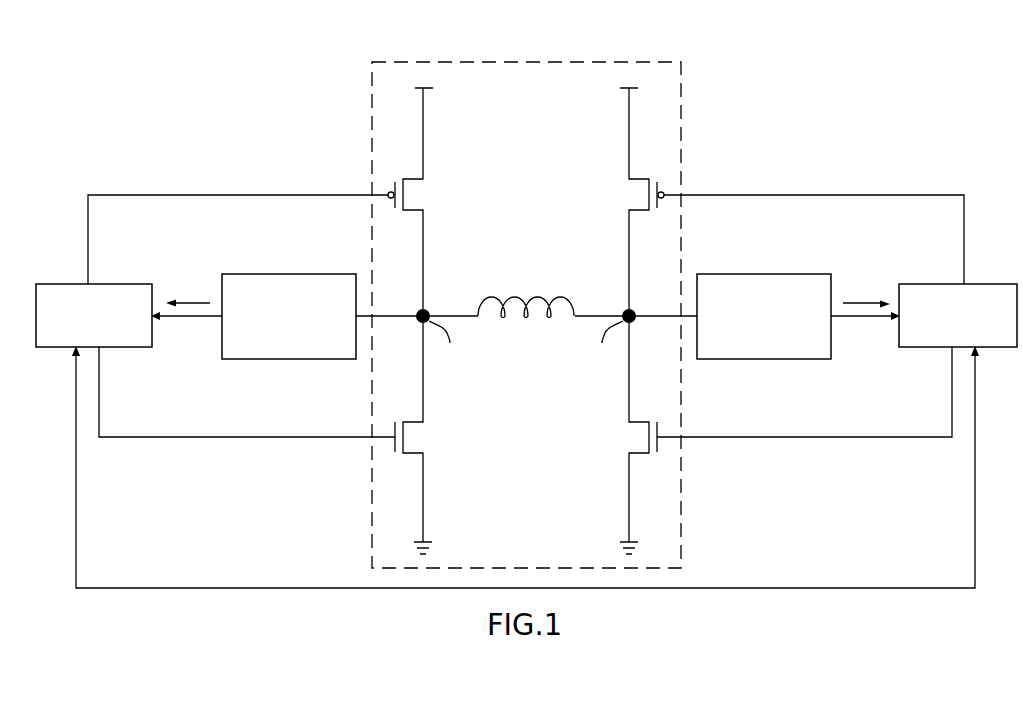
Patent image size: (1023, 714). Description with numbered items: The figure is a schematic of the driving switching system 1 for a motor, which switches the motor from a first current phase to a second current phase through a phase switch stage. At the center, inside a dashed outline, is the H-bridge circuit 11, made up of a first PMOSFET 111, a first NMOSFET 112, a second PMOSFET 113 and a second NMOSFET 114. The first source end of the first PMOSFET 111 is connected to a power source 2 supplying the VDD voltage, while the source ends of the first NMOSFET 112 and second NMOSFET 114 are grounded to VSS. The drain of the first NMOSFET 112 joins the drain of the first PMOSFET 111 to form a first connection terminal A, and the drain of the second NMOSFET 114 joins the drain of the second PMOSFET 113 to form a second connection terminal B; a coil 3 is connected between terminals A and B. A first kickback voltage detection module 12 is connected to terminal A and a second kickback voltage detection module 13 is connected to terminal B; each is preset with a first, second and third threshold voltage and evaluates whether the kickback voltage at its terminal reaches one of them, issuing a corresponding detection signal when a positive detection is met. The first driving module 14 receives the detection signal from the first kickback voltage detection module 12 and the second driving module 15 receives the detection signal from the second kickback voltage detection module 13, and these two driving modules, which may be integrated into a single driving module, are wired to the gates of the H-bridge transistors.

The system 1 is at (328, 80).
The H-bridge circuit 11 is at (682, 108).
The first PMOSFET 111 is at (415, 215).
The first NMOSFET 112 is at (415, 455).
The second PMOSFET 113 is at (637, 215).
The second NMOSFET 114 is at (637, 455).
The power source 2 is at (427, 89).
The coil 3 is at (525, 296).
The first kickback voltage detection module 12 is at (233, 274).
The second kickback voltage detection module 13 is at (708, 274).
The first driving module 14 is at (47, 284).
The second driving module 15 is at (911, 284).